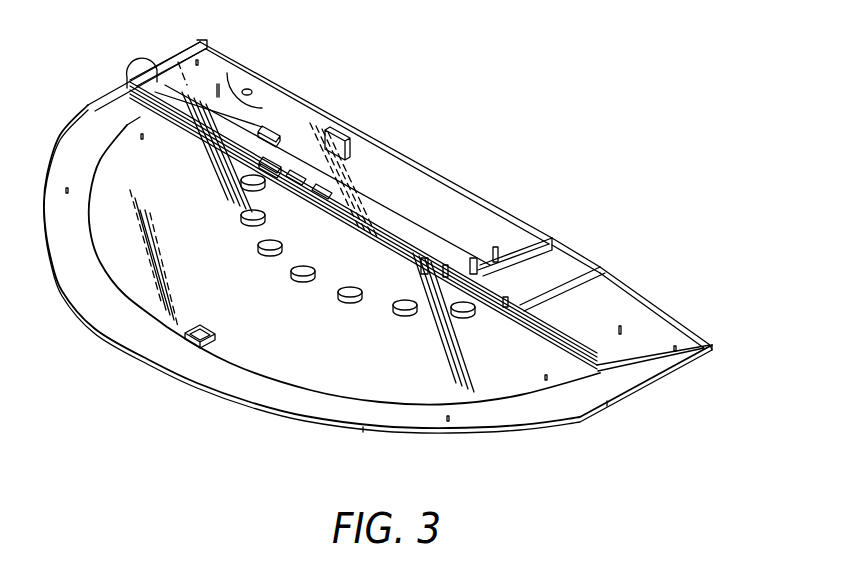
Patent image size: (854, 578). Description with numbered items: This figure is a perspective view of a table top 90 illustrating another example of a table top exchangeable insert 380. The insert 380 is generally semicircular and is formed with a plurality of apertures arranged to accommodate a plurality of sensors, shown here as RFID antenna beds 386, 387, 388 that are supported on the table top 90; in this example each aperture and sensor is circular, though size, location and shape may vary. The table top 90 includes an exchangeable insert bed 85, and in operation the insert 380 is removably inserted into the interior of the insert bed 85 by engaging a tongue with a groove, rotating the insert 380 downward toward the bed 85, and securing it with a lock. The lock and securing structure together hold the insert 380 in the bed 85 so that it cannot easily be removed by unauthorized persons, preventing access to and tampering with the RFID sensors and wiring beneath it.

The exchangeable insert bed 85 is at (310, 373).
The table top 90 is at (197, 365).
The table top exchangeable insert 380 is at (260, 103).
The RFID antenna bed 386 is at (241, 175).
The RFID antenna bed 387 is at (241, 214).
The RFID antenna bed 388 is at (291, 276).